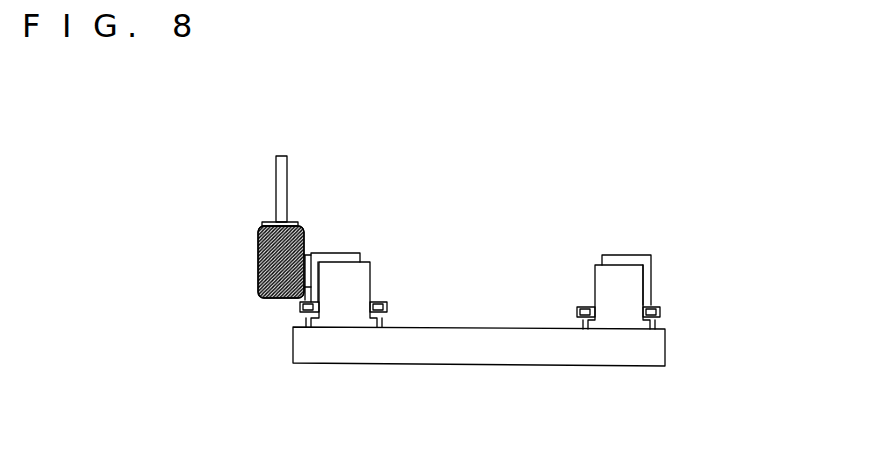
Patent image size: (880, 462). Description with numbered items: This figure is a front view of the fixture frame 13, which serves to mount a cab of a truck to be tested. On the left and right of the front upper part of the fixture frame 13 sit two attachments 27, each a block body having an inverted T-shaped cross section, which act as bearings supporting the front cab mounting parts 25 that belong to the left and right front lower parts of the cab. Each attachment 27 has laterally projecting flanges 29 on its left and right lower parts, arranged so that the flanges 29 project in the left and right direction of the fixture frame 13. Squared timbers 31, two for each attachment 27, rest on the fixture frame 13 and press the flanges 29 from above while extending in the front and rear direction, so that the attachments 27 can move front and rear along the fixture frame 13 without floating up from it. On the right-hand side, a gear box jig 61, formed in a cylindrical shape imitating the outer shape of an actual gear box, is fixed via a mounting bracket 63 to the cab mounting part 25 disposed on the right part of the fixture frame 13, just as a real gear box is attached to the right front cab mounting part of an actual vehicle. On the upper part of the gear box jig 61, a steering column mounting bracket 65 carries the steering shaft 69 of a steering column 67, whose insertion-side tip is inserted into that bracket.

The fixture frame 13 is at (472, 337).
The cab mounting part 25 is at (351, 254).
The attachment 27 is at (357, 292).
The flange 29 is at (301, 329).
The squared timber 31 is at (383, 307).
The gear box jig 61 is at (260, 273).
The mounting bracket 63 is at (304, 250).
The steering column mounting bracket 65 is at (266, 223).
The steering column 67 is at (283, 151).
The steering shaft 69 is at (282, 175).